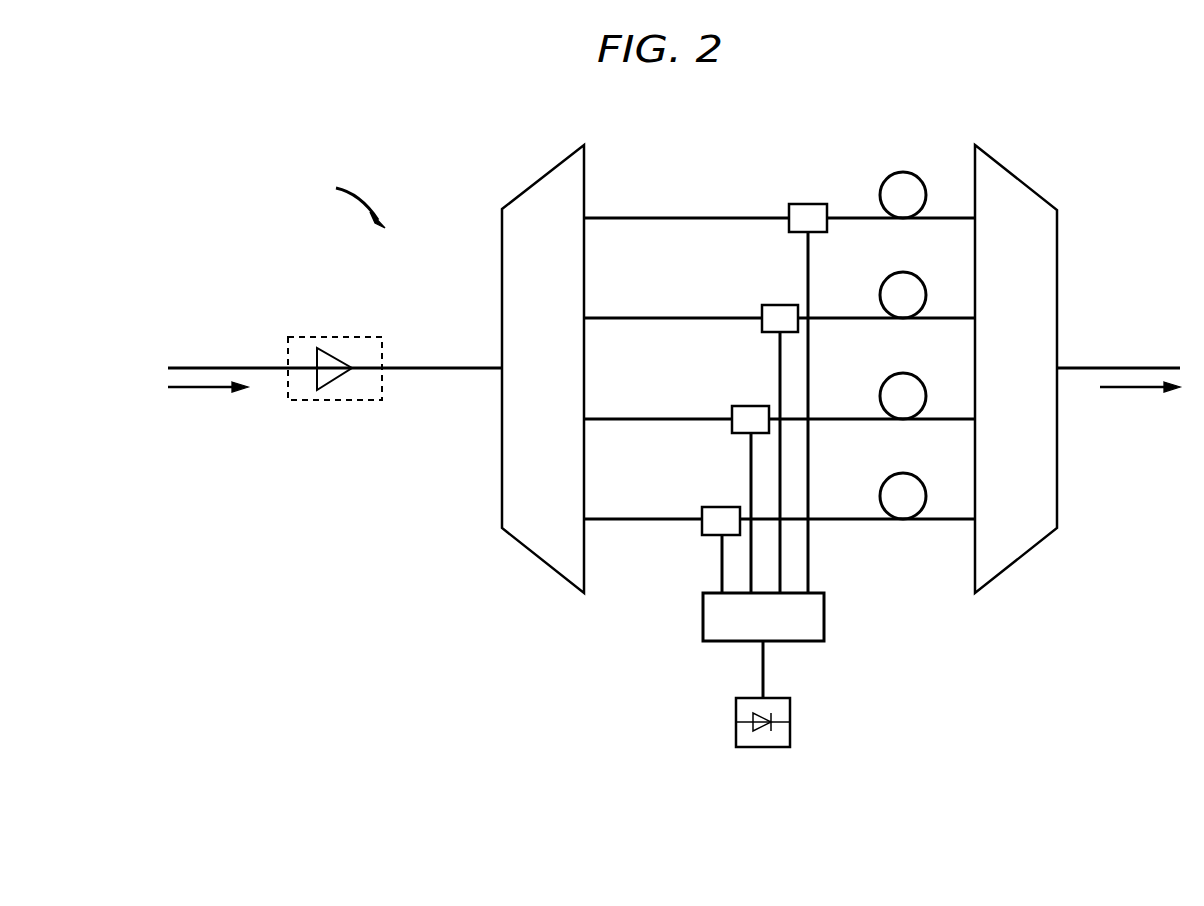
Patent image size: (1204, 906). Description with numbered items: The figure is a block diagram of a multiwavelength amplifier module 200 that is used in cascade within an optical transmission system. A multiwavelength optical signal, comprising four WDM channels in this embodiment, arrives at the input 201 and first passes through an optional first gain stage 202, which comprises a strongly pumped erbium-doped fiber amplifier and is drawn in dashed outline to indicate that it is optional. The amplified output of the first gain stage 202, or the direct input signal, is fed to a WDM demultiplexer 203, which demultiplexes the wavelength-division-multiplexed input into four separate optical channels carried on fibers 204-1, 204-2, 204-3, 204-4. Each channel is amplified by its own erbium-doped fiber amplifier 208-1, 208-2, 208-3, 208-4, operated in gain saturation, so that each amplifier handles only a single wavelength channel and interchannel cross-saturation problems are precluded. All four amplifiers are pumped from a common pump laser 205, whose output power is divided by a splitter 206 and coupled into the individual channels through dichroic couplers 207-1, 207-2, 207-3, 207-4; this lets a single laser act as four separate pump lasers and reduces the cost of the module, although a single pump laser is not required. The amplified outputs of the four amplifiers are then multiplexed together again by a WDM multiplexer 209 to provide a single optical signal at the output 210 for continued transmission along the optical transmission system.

The multiwavelength amplifier module 200 is at (338, 201).
The input 201 is at (181, 368).
The first gain stage 202 is at (352, 337).
The WDM demultiplexer 203 is at (541, 180).
The fiber 204-1 is at (675, 219).
The fiber 204-2 is at (675, 319).
The fiber 204-3 is at (675, 420).
The fiber 204-4 is at (675, 520).
The pump laser 205 is at (780, 747).
The splitter 206 is at (812, 641).
The dichroic coupler 207-1 is at (805, 204).
The dichroic coupler 207-2 is at (785, 305).
The dichroic coupler 207-3 is at (760, 406).
The dichroic coupler 207-4 is at (728, 507).
The erbium-doped fiber amplifier 208-1 is at (887, 178).
The erbium-doped fiber amplifier 208-2 is at (880, 293).
The erbium-doped fiber amplifier 208-3 is at (881, 390).
The erbium-doped fiber amplifier 208-4 is at (881, 490).
The WDM multiplexer 209 is at (1020, 181).
The output 210 is at (1160, 368).